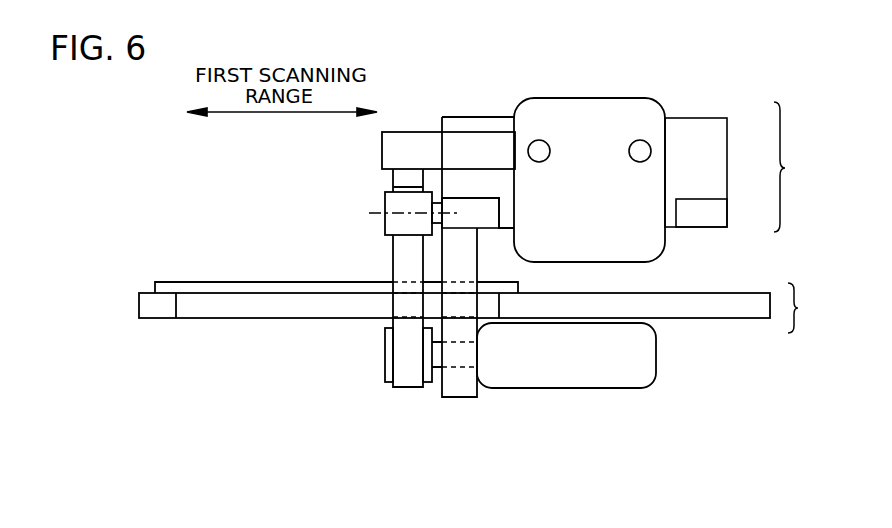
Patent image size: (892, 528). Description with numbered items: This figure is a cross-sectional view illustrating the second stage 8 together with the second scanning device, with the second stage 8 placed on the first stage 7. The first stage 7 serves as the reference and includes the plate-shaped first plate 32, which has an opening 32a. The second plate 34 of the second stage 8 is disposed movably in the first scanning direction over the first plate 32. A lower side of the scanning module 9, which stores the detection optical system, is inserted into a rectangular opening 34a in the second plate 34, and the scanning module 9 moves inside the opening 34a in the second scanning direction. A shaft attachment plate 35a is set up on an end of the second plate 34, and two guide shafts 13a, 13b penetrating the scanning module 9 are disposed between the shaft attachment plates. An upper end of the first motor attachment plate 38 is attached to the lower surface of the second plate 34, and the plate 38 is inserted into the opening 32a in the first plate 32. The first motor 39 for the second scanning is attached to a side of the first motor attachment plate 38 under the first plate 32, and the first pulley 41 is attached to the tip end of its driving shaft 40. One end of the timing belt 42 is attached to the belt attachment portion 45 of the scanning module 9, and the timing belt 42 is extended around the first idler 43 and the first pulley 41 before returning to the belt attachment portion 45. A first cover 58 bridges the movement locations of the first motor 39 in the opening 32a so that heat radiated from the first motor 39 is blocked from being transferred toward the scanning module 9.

The first stage 7 is at (802, 308).
The second stage 8 is at (788, 167).
The scanning module 9 is at (586, 98).
The guide shaft 13a is at (642, 141).
The guide shaft 13b is at (537, 141).
The first plate 32 is at (139, 304).
The opening 32a is at (178, 308).
The second plate 34 is at (705, 222).
The rectangular opening 34a is at (505, 215).
The shaft attachment plate 35a is at (708, 120).
The first motor attachment plate 38 is at (462, 397).
The first motor 39 is at (656, 375).
The driving shaft 40 is at (460, 367).
The first pulley 41 is at (385, 363).
The timing belt 42 is at (393, 256).
The first idler 43 is at (385, 201).
The belt attachment portion 45 is at (382, 150).
The first cover 58 is at (248, 282).